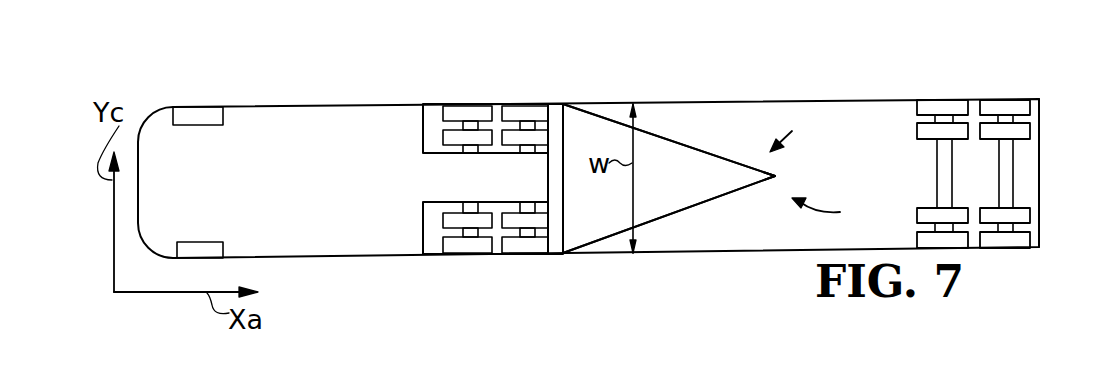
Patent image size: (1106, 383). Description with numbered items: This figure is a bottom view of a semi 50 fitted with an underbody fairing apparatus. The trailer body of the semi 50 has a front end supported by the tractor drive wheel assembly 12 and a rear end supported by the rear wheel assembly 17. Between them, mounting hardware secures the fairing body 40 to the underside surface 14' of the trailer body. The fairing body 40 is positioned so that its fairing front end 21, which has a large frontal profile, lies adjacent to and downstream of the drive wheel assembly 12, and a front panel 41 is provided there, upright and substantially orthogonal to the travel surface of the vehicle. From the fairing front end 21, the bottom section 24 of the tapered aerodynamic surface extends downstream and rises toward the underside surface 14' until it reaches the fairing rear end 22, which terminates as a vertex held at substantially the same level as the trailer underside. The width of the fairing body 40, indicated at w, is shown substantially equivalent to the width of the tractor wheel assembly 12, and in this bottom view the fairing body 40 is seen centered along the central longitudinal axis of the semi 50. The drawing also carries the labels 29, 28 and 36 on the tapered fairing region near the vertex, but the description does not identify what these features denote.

The semi 50 is at (292, 195).
The tractor drive wheel assembly 12 is at (513, 103).
The front panel 41 is at (558, 102).
The fairing front end 21 is at (563, 126).
The bottom section 24 is at (697, 197).
The upper strut 29 is at (700, 149).
The lower strut 28 is at (720, 200).
The coupling apex 36 is at (777, 176).
The fairing rear end 22 is at (797, 130).
The fairing body 40 is at (834, 212).
The underside surface 14' is at (948, 173).
The rear wheel assembly 17 is at (978, 99).